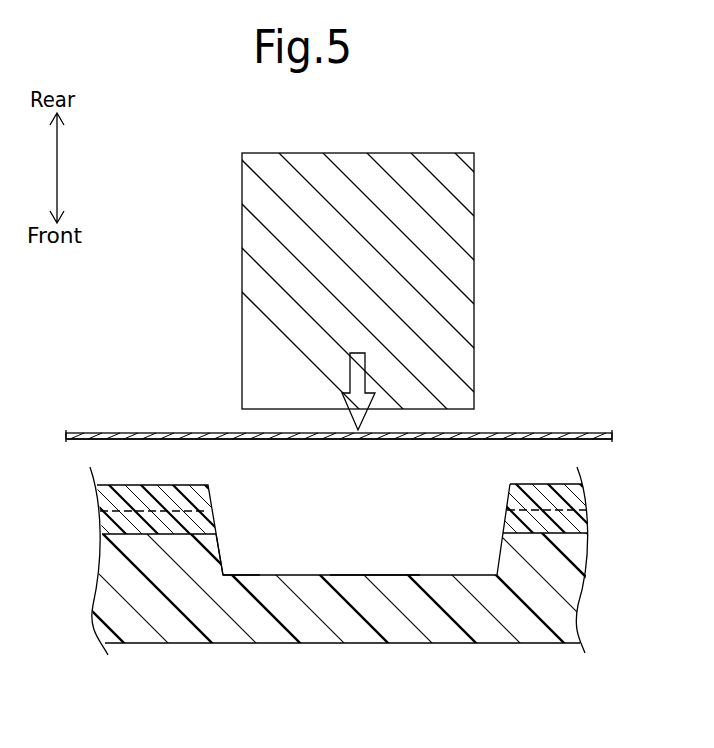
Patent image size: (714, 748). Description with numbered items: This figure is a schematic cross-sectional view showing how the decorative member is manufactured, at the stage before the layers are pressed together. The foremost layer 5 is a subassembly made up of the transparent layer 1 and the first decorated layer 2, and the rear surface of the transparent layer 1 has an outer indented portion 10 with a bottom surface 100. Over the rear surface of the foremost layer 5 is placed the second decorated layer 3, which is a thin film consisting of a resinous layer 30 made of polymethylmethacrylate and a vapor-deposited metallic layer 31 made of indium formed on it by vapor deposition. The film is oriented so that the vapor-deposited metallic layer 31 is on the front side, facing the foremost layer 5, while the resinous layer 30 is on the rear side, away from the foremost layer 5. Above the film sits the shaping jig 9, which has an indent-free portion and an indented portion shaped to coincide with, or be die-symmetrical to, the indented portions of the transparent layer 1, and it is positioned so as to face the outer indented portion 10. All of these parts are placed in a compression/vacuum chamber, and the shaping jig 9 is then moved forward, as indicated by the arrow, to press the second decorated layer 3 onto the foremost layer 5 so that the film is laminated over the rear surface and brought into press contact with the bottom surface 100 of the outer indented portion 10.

The shaping jig 9 is at (453, 230).
The second decorated layer 3 is at (339, 430).
The resinous layer 30 is at (157, 432).
The vapor-deposited metallic layer 31 is at (250, 441).
The foremost layer 5 is at (357, 353).
The first decorated layer 2 is at (575, 490).
The transparent layer 1 is at (507, 640).
The outer indented portion 10 is at (242, 564).
The bottom surface 100 is at (346, 575).